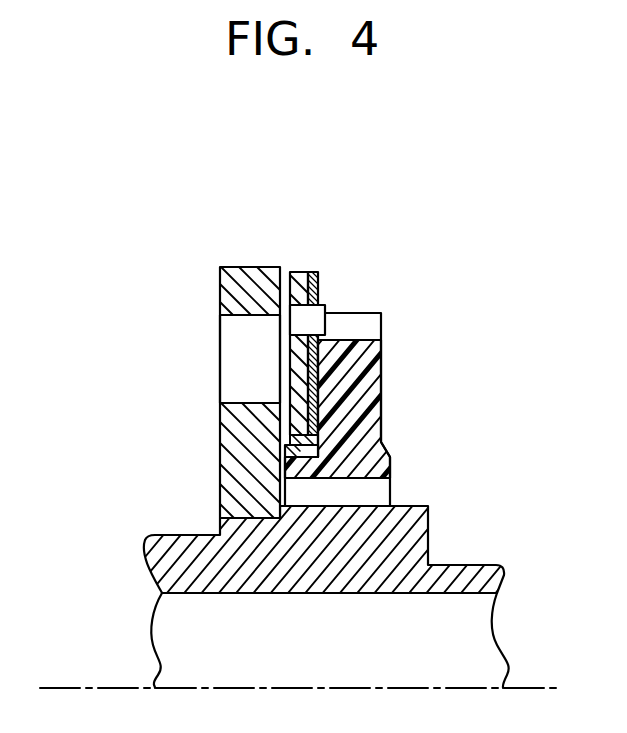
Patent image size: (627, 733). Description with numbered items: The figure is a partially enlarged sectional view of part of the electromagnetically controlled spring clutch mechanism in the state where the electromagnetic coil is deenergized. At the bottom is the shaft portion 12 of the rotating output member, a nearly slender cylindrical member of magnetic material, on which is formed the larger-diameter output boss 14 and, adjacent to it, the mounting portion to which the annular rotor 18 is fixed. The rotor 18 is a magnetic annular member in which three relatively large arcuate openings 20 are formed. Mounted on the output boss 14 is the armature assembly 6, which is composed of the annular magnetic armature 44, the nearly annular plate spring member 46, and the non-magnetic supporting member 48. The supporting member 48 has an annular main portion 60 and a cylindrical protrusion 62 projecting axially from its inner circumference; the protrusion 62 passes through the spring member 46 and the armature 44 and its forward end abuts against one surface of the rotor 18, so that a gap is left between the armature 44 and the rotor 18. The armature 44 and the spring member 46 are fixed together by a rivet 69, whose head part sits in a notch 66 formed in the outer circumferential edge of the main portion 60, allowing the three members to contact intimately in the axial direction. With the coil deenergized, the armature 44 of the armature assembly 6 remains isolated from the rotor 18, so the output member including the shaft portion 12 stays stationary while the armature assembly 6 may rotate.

The armature assembly 6 is at (340, 293).
The shaft portion 12 is at (506, 562).
The output boss 14 is at (358, 504).
The rotor 18 is at (216, 282).
The arcuate openings 20 is at (258, 315).
The armature 44 is at (295, 267).
The spring member 46 is at (323, 267).
The supporting member 48 is at (383, 365).
The main portion 60 is at (373, 408).
The cylindrical protrusion 62 is at (288, 452).
The notches 66 is at (358, 325).
The rivet 69 is at (320, 313).